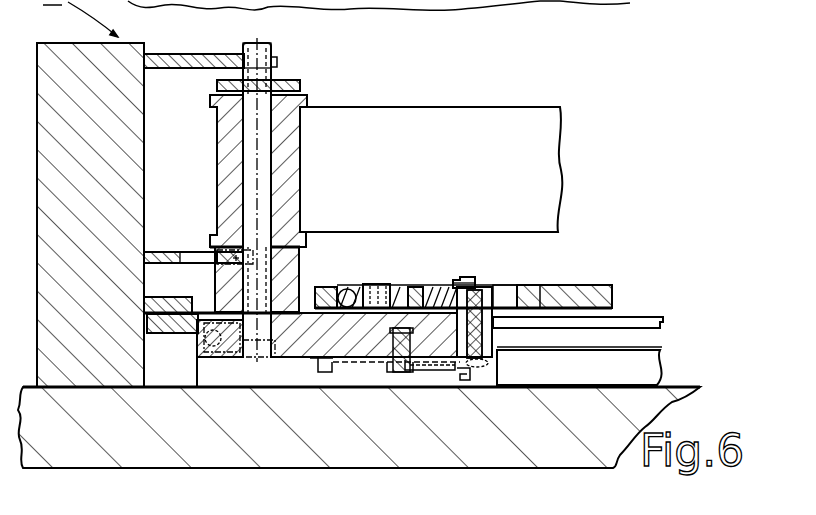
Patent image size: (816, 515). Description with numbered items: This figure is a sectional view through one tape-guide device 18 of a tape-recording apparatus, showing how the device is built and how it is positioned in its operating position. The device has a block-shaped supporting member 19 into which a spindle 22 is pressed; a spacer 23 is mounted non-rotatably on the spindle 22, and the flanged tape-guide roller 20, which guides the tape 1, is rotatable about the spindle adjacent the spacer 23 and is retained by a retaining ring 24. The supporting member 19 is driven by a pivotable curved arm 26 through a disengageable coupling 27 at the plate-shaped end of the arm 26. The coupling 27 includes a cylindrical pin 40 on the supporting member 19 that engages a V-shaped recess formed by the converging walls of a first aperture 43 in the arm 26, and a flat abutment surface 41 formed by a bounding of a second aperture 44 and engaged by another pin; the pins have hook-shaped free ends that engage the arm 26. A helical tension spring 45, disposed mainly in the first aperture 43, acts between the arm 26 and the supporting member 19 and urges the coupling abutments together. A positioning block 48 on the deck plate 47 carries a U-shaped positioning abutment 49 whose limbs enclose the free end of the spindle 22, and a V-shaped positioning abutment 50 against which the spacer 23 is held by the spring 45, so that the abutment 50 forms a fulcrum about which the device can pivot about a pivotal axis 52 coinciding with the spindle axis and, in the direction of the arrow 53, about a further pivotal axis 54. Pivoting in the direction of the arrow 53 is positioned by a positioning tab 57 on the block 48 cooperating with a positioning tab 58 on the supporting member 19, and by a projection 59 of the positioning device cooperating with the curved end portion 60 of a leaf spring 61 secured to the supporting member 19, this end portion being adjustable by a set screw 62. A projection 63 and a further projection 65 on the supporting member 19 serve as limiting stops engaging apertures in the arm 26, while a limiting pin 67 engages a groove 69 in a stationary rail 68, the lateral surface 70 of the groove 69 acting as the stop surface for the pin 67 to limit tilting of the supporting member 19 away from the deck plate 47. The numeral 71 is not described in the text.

The tape 1 is at (493, 120).
The tape-guide device 18 is at (340, 104).
The supporting member 19 is at (300, 340).
The tape-guide roller 20 is at (233, 190).
The spindle 22 is at (265, 79).
The spacer 23 is at (220, 293).
The retaining ring 24 is at (296, 89).
The arm 26 is at (590, 292).
The disengageable coupling 27 is at (478, 267).
The cylindrical pin 40 is at (465, 277).
The flat abutment surface 41 is at (345, 290).
The first aperture 43 is at (579, 280).
The second aperture 44 is at (356, 300).
The spring 45 is at (397, 285).
The deck plate 47 is at (123, 453).
The positioning block 48 is at (133, 175).
The U-shaped positioning abutment 49 is at (235, 60).
The V-shaped positioning abutment 50 is at (185, 252).
The pivotal axis 52 is at (264, 58).
The arrow 53 is at (502, 268).
The pivotal axis 54 is at (217, 253).
The positioning tab 57 is at (182, 302).
The positioning tab 58 is at (177, 340).
The projection 59 is at (457, 373).
The curved end portion 60 is at (490, 365).
The leaf spring 61 is at (378, 366).
The set screw 62 is at (495, 333).
The projection 63 is at (378, 285).
The further projection 65 is at (508, 300).
The limiting pin 67 is at (207, 350).
The rail 68 is at (618, 320).
The groove 69 is at (653, 342).
The lateral surface 70 is at (634, 327).
The flange 71 is at (232, 357).